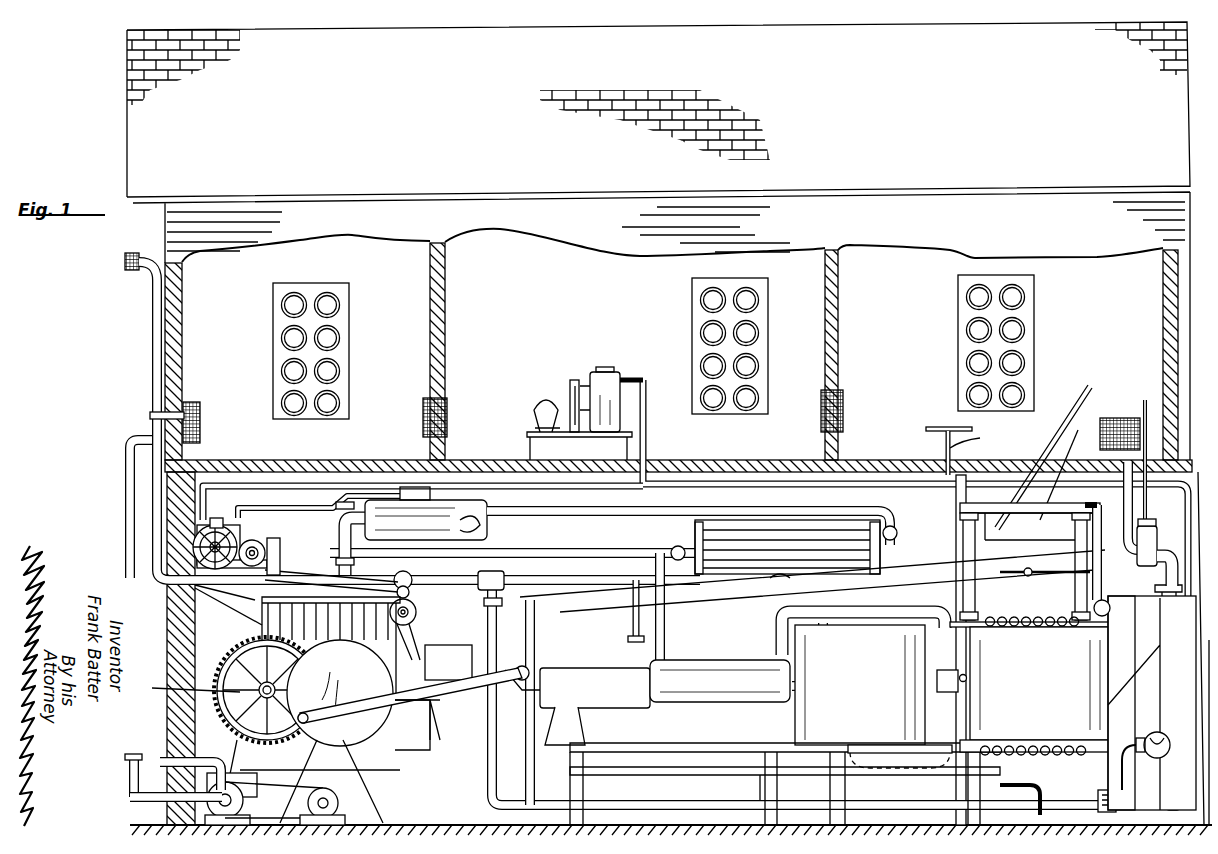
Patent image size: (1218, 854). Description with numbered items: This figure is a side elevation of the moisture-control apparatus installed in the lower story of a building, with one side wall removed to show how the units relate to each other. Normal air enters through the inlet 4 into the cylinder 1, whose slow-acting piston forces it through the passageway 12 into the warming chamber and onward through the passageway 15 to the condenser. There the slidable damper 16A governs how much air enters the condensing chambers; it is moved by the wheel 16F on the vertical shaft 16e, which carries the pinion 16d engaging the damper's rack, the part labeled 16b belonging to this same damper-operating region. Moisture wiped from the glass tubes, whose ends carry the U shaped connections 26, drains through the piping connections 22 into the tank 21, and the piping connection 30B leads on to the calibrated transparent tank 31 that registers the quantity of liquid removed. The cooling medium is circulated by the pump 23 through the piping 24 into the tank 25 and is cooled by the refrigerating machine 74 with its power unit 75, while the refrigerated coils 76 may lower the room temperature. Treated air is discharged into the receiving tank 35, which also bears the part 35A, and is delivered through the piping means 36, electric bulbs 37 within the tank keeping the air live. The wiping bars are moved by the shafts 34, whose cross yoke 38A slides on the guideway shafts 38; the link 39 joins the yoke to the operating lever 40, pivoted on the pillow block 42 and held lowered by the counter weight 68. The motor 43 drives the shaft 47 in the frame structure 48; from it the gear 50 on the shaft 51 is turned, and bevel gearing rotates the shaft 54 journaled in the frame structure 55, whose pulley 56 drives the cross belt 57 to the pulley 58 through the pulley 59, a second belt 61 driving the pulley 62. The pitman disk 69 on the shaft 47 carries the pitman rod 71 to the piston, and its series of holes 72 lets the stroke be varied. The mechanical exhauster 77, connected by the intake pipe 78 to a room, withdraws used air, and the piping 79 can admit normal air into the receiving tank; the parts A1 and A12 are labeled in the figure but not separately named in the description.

The cylinder 1 is at (692, 655).
The inlet 4 is at (152, 360).
The passageway 12 is at (790, 596).
The passageway 15 is at (866, 770).
The damper 16A is at (966, 722).
The collar 16b is at (968, 680).
The pinion 16d is at (960, 672).
The vertically mounted shaft 16e is at (982, 438).
The wheel 16F is at (934, 425).
The tank 21 is at (1118, 780).
The piping connections 22 is at (1060, 778).
The pump 23 is at (645, 704).
The piping 24 is at (575, 552).
The tank 25 is at (455, 500).
The U shaped connections 26 is at (1000, 614).
The piping connection 30B is at (646, 420).
The calibrated transparent tank 31 is at (612, 374).
The shaft 34 is at (977, 550).
The receiving tank 35 is at (1140, 657).
The pipe 35A is at (1174, 557).
The piping means 36 is at (1130, 532).
The electric bulbs 37 is at (1156, 734).
The guideway shafts 38 is at (987, 590).
The cross yoke 38A is at (1061, 450).
The link 39 is at (1090, 464).
The operating lever 40 is at (920, 558).
The pillow block 42 is at (466, 712).
The motor 43 is at (421, 724).
The shaft 47 is at (306, 740).
The frame structure 48 is at (442, 778).
The gear 50 is at (232, 726).
The shaft 51 is at (190, 675).
The shaft 54 is at (290, 612).
The frame structure 55 is at (414, 630).
The pulley 56 is at (200, 590).
The cross belt 57 is at (300, 584).
The pulley 58 is at (412, 578).
The pulley 59 is at (410, 590).
The second belt 61 is at (416, 610).
The pulley 62 is at (442, 606).
The counter weight 68 is at (445, 645).
The pitman disk 69 is at (358, 752).
The pitman rod 71 is at (530, 610).
The series of holes 72 is at (340, 693).
The refrigerating machine 74 is at (232, 535).
The power unit 75 is at (272, 548).
The refrigerated coils 76 is at (730, 572).
The mechanical exhauster 77 is at (140, 797).
The intake pipe 78 is at (126, 478).
The piping 79 is at (612, 800).
The pivot A1 is at (535, 664).
The tank A12 is at (863, 678).